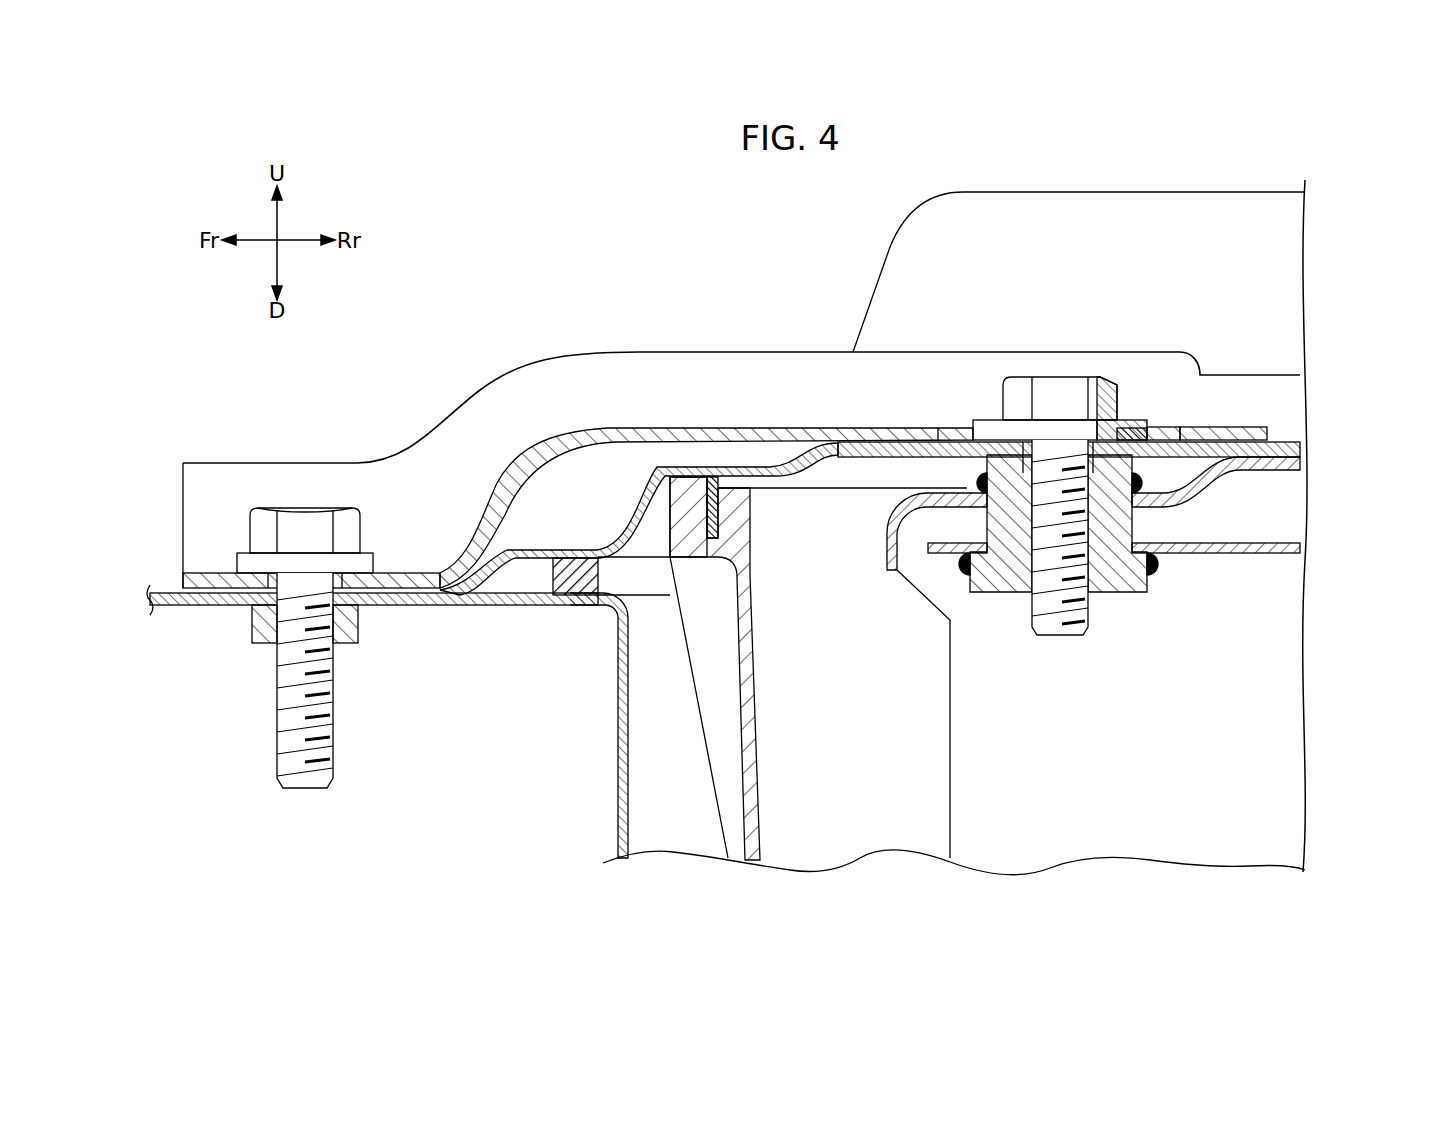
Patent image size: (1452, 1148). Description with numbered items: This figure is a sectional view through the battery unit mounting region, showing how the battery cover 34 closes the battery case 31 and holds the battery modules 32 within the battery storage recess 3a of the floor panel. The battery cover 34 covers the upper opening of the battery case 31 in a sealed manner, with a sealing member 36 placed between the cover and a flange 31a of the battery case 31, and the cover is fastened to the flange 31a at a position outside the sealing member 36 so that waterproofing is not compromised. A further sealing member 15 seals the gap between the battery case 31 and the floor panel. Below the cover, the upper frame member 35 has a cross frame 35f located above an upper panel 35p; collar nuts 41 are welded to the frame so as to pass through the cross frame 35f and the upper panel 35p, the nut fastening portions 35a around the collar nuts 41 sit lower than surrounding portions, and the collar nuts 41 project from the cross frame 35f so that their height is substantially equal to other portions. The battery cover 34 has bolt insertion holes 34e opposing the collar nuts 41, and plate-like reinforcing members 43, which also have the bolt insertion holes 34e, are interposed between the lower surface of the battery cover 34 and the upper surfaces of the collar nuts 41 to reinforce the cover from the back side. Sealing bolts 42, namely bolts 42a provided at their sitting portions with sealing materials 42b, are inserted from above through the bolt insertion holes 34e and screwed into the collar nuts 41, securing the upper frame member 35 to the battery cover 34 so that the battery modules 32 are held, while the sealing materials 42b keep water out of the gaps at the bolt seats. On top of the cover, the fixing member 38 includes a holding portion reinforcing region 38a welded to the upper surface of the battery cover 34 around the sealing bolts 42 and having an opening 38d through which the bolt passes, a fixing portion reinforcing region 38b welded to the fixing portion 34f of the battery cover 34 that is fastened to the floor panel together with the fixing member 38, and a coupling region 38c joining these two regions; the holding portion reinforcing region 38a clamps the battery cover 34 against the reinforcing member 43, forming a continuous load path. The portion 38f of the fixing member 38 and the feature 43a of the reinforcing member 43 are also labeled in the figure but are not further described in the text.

The battery storage recess 3a is at (630, 774).
The sealing member 15 is at (578, 597).
The battery case 31 is at (765, 668).
The flange 31a is at (668, 513).
The battery modules 32 is at (948, 828).
The battery cover 34 is at (620, 481).
The bolt insertion holes 34e is at (1052, 443).
The fixing portions 34f is at (220, 606).
The upper frame member 35 is at (1160, 451).
The nut fastening portions 35a is at (945, 428).
The cross frame 35f is at (1250, 472).
The upper panel 35p is at (1247, 556).
The sealing member 36 is at (712, 538).
The fixing members 38 is at (741, 440).
The holding portion reinforcing regions 38a is at (1250, 428).
The fixing portion reinforcing regions 38b is at (205, 573).
The coupling regions 38c is at (600, 427).
The openings 38d is at (1183, 428).
The flange of bracket 38f is at (492, 381).
The collar nuts 41 is at (1120, 592).
The sealing bolts 42 is at (1068, 455).
The bolts 42a is at (1010, 390).
The sealing materials 42b is at (1150, 428).
The reinforcing members 43 is at (1058, 559).
The collar hole 43a is at (1045, 470).